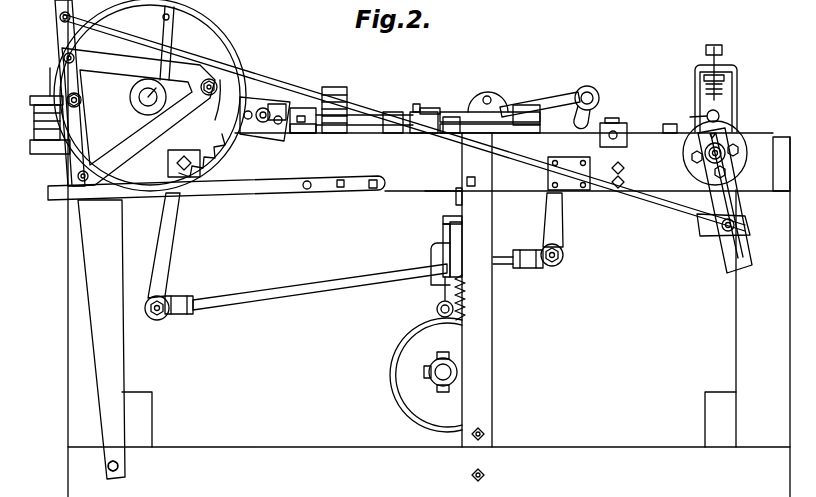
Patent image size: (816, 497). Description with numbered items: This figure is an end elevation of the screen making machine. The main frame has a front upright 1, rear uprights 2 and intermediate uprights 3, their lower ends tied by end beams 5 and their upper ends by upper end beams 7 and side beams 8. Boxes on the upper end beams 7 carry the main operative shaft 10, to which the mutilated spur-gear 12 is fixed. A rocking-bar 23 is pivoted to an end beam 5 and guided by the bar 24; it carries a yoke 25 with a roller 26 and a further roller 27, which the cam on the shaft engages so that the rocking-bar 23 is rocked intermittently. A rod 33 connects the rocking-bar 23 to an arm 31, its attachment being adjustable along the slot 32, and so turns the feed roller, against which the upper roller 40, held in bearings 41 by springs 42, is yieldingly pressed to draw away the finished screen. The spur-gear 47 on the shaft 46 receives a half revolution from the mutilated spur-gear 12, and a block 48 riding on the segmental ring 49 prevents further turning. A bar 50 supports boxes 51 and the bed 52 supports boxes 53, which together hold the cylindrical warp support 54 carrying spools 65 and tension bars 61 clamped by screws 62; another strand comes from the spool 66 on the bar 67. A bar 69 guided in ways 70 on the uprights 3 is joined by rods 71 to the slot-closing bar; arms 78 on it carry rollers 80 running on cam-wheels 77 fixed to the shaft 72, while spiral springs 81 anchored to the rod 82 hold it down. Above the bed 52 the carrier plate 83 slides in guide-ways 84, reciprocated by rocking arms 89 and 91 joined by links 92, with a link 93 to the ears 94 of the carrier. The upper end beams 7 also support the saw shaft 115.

The front upright 1 is at (68, 373).
The rear uprights 2 is at (738, 348).
The intermediate uprights 3 is at (493, 324).
The end beams 5 is at (278, 448).
The upper end beams 7 is at (425, 188).
The side beams 8 is at (779, 137).
The main operative shaft 10 is at (142, 99).
The mutilated spur-gear 12 is at (219, 46).
The rocking-bar 23 is at (88, 313).
The bar 24 is at (256, 187).
The yoke 25 is at (180, 68).
The roller 26 is at (232, 78).
The roller 27 is at (64, 98).
The arm 31 is at (727, 255).
The slot 32 is at (720, 237).
The rod 33 is at (655, 203).
The roller 40 is at (716, 113).
The bearings 41 is at (729, 116).
The springs 42 is at (720, 93).
The shaft 46 is at (267, 122).
The spur-gear 47 is at (283, 100).
The block 48 is at (238, 142).
The segmental ring 49 is at (258, 92).
The bar 50 is at (302, 133).
The boxes 51 is at (311, 107).
The bed 52 is at (444, 137).
The boxes 53 is at (425, 108).
The support 54 is at (364, 120).
The bars 61 is at (415, 113).
The screws 62 is at (415, 105).
The spools 65 is at (344, 92).
The spool 66 is at (40, 113).
The bar 67 is at (54, 149).
The bar 69 is at (452, 246).
The ways 70 is at (457, 221).
The rods 71 is at (462, 197).
The shaft 72 is at (458, 371).
The cam-wheels 77 is at (389, 372).
The arms 78 is at (443, 284).
The roller 80 is at (436, 308).
The spiral springs 81 is at (466, 297).
The rod 82 is at (484, 435).
The plate 83 is at (504, 120).
The guide-ways 84 is at (528, 113).
The rocking arms 89 is at (170, 243).
The rocking arm 91 is at (564, 218).
The links 92 is at (320, 287).
The link 93 is at (571, 91).
The ears 94 is at (481, 97).
The shaft 115 is at (620, 138).